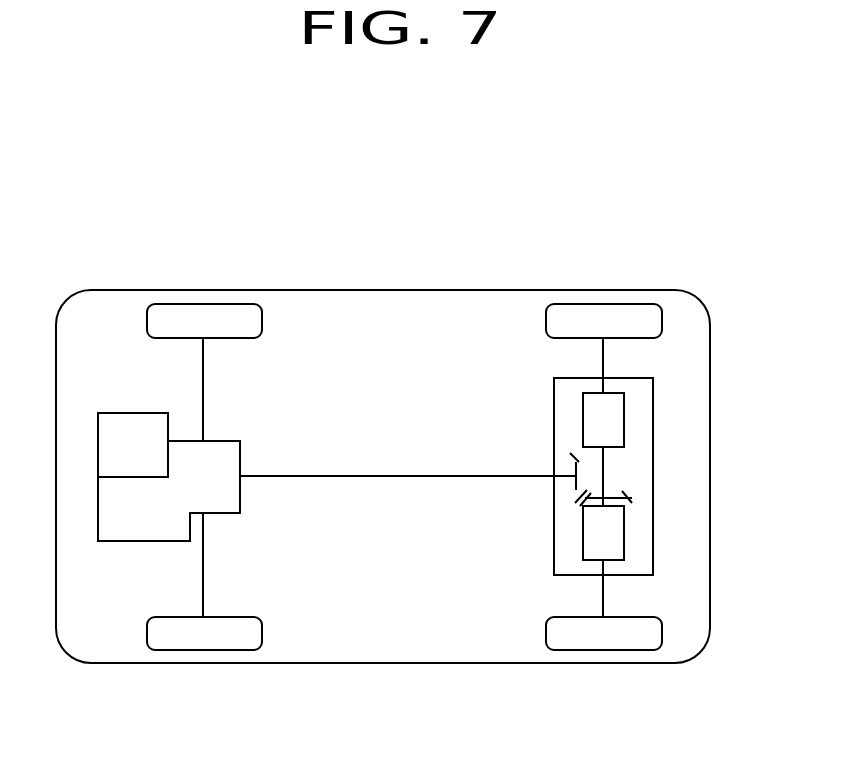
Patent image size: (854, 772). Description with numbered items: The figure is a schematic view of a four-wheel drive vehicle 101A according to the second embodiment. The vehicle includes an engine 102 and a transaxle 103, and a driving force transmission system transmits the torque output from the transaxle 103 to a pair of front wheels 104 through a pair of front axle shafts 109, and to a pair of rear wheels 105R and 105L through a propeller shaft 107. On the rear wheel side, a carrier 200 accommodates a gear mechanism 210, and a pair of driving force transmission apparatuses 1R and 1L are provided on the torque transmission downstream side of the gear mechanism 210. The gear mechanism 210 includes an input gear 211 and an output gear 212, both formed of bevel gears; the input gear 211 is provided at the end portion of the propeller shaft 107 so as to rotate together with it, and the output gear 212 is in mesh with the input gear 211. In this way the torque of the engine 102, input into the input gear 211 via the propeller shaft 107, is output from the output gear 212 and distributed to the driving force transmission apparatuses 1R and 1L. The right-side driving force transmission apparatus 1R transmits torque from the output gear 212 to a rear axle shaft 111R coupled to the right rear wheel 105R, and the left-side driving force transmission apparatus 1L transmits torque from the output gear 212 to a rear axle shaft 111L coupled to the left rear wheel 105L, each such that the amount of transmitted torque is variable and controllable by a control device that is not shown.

The four-wheel drive vehicle 101A is at (413, 290).
The front wheels 104 is at (207, 304).
The front axle shafts 109 is at (203, 377).
The engine 102 is at (130, 413).
The transaxle 103 is at (130, 541).
The propeller shaft 107 is at (355, 476).
The carrier 200 is at (554, 408).
The right rear wheel 105R is at (607, 304).
The left rear wheel 105L is at (607, 650).
The rear axle shaft 111R is at (603, 357).
The rear axle shaft 111L is at (603, 598).
The right-side driving force transmission apparatus 1R is at (624, 418).
The left-side driving force transmission apparatus 1L is at (624, 530).
The gear mechanism 210 is at (508, 511).
The input gear 211 is at (574, 487).
The output gear 212 is at (582, 500).